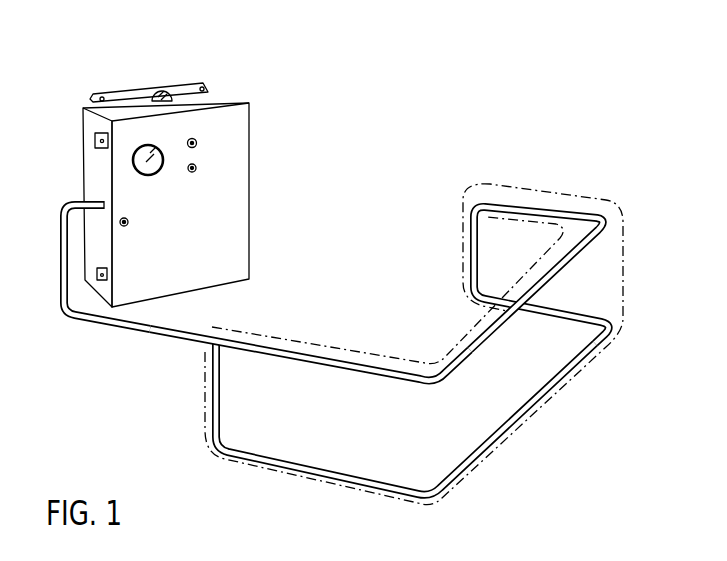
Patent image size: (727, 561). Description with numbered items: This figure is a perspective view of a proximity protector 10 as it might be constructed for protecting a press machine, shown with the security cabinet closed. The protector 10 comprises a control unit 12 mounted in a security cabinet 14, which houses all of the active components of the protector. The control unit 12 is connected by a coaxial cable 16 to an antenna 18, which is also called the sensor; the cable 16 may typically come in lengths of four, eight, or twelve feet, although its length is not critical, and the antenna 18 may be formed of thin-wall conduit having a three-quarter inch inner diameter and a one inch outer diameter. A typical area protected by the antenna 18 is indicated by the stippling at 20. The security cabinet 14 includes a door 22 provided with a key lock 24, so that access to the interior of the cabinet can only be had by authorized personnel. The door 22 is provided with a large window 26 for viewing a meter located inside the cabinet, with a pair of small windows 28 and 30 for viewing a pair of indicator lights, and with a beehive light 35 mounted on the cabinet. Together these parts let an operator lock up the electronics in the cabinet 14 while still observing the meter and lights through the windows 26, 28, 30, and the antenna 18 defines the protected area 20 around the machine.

The proximity protector 10 is at (329, 270).
The control unit 12 is at (182, 171).
The security cabinet 14 is at (92, 163).
The coaxial cable 16 is at (123, 336).
The antenna 18 is at (550, 205).
The protected area 20 is at (386, 357).
The door 22 is at (233, 253).
The key lock 24 is at (128, 226).
The large window 26 is at (149, 76).
The small window 28 is at (197, 141).
The small window 30 is at (196, 172).
The beehive light 35 is at (165, 91).